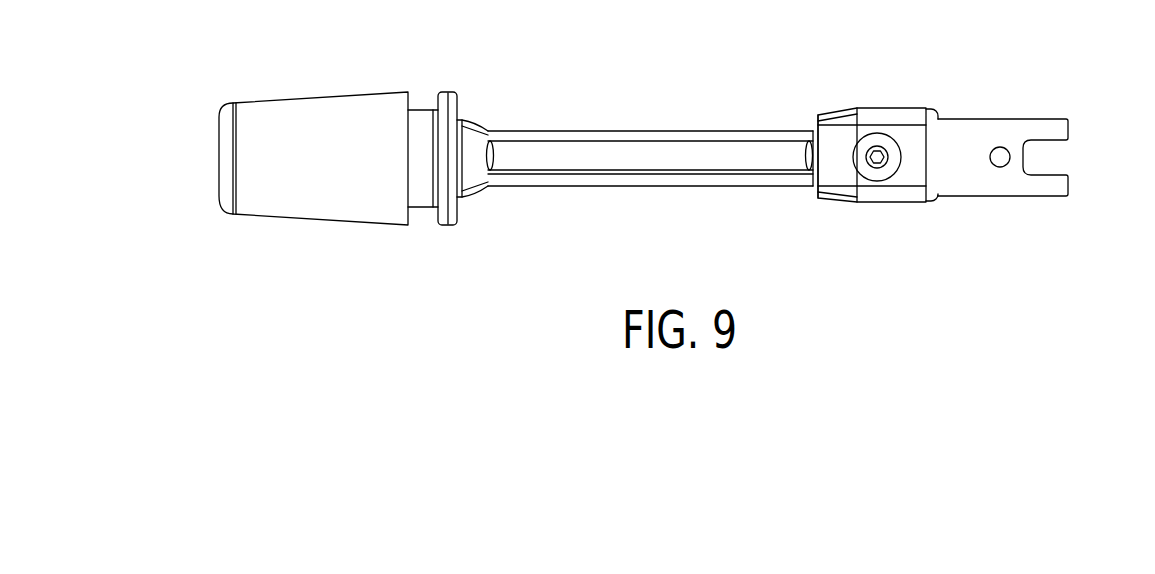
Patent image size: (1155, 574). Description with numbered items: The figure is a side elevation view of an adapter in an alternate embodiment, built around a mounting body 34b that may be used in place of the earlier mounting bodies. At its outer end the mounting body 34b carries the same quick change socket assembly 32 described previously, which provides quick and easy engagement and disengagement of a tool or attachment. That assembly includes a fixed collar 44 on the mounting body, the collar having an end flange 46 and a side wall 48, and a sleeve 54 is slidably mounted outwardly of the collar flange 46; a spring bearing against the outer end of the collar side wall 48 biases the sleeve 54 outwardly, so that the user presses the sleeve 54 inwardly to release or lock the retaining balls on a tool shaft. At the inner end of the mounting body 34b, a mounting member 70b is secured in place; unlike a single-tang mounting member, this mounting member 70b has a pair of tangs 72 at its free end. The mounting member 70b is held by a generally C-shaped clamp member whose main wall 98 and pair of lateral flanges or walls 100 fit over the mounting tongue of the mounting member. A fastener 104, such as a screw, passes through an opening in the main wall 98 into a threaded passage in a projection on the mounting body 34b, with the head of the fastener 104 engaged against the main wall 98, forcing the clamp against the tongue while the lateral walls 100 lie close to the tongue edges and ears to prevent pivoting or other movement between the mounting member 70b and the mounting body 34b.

The quick change socket assembly 32 is at (332, 48).
The mounting body 34b is at (612, 130).
The fixed collar 44 is at (462, 68).
The end flange 46 is at (447, 222).
The side wall 48 is at (423, 205).
The sleeve 54 is at (300, 223).
The mounting member 70b is at (1007, 112).
The tangs 72 is at (1067, 127).
The main wall 98 is at (893, 118).
The lateral flanges or walls 100 is at (815, 123).
The fastener 104 is at (877, 174).